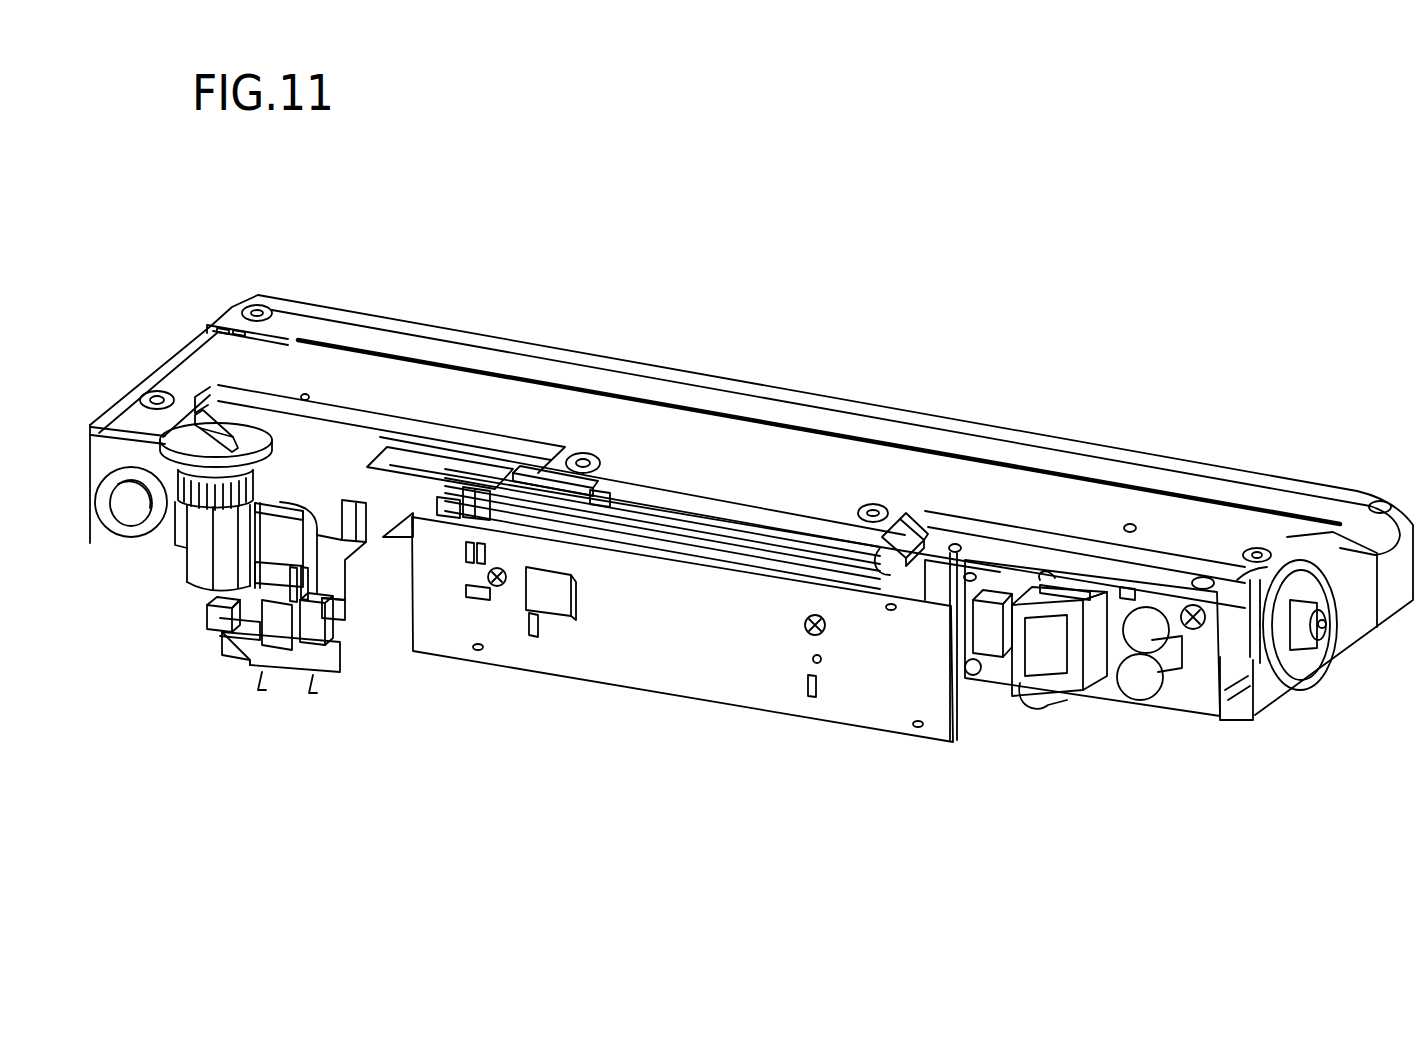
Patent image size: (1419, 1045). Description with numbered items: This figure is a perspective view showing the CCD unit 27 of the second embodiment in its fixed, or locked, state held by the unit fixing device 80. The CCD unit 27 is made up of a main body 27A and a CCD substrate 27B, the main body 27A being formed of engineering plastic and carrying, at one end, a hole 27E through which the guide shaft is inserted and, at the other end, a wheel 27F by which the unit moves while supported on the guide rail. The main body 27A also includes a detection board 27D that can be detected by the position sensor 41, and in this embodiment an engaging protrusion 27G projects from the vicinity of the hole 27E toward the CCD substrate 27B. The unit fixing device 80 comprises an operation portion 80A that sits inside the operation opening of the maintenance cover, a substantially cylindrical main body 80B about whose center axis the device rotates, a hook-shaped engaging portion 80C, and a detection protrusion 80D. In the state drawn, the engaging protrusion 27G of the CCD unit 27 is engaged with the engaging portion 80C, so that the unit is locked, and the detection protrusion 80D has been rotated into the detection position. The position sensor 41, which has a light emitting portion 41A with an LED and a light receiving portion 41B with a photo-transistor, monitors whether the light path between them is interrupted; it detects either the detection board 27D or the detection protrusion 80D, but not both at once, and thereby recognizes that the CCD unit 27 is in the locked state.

The CCD unit 27 is at (1205, 432).
The main body 27A is at (833, 458).
The CCD substrate 27B is at (745, 672).
The detection board 27D is at (337, 572).
The hole 27E is at (104, 500).
The wheel 27F is at (1295, 660).
The engaging protrusion 27G is at (318, 595).
The position sensor 41 is at (292, 690).
The light emitting portion 41A is at (264, 622).
The light receiving portion 41B is at (310, 655).
The unit fixing device 80 is at (176, 556).
The operation portion 80A is at (176, 424).
The main body 80B is at (207, 573).
The engaging portion 80C is at (318, 500).
The detection protrusion 80D is at (280, 660).